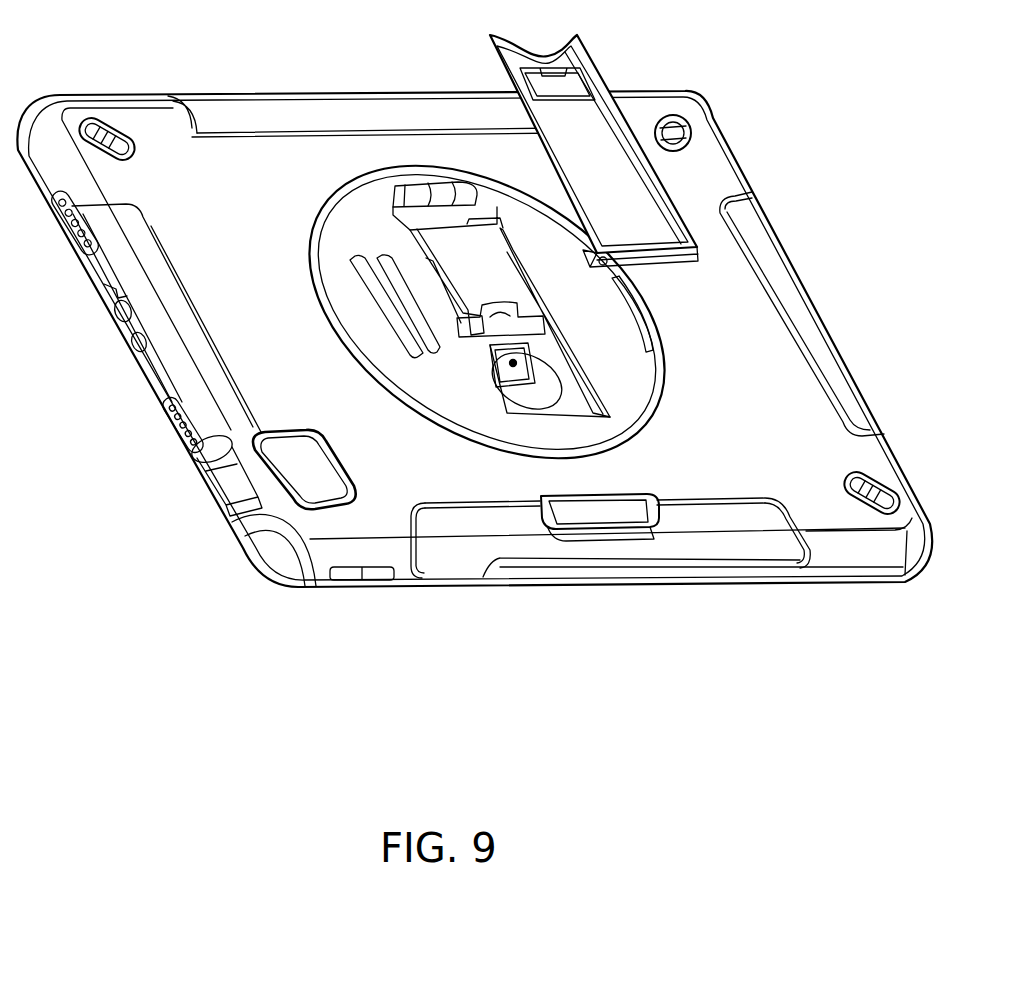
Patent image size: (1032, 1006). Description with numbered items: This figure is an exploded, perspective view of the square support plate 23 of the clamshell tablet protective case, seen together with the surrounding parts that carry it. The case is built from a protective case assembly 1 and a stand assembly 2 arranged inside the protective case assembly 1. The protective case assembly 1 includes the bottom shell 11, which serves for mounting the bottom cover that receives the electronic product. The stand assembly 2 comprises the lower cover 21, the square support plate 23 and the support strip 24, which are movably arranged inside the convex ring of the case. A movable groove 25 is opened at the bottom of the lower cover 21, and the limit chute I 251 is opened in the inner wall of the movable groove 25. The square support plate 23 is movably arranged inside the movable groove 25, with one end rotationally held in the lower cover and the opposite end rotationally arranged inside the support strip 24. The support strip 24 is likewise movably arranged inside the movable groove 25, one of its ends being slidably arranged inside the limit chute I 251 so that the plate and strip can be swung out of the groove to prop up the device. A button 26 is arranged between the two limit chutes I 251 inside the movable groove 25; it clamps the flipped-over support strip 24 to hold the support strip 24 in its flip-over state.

The protective case assembly 1 is at (140, 380).
The bottom shell 11 is at (207, 240).
The stand assembly 2 is at (674, 183).
The lower cover 21 is at (375, 225).
The square support plate 23 is at (473, 259).
The support strip 24 is at (614, 156).
The movable groove 25 is at (553, 323).
The limit chute I 251 is at (582, 387).
The button 26 is at (513, 363).